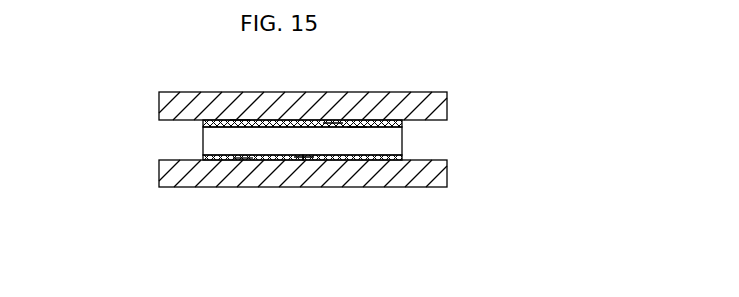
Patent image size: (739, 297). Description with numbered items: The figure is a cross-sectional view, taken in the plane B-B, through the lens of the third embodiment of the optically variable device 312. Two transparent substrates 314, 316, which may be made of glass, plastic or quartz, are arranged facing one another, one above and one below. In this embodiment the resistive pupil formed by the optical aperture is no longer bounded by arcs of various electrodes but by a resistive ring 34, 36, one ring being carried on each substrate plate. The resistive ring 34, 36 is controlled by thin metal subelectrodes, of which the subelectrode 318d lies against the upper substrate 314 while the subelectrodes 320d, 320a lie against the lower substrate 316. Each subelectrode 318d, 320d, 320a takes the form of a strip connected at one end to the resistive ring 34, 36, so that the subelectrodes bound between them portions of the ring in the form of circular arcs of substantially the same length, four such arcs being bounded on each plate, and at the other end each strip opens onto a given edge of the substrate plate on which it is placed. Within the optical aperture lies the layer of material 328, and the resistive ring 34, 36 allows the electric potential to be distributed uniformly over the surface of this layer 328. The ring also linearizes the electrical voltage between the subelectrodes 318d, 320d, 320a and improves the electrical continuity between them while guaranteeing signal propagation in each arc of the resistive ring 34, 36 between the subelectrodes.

The transparent substrate 314 is at (440, 102).
The transparent substrate 316 is at (397, 187).
The optically variable device 312 is at (333, 140).
The thin metal subelectrode 318d is at (215, 123).
The thin metal subelectrode 320d is at (210, 157).
The thin metal subelectrode 320a is at (403, 157).
The resistive ring 34 is at (240, 121).
The layer of material 328 is at (333, 123).
The resistive ring 36 is at (243, 160).